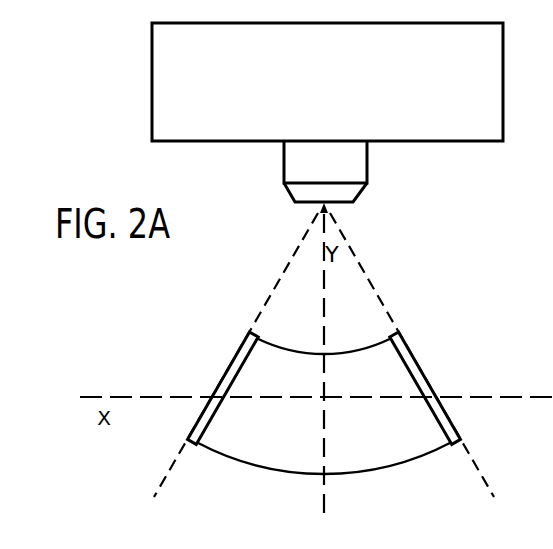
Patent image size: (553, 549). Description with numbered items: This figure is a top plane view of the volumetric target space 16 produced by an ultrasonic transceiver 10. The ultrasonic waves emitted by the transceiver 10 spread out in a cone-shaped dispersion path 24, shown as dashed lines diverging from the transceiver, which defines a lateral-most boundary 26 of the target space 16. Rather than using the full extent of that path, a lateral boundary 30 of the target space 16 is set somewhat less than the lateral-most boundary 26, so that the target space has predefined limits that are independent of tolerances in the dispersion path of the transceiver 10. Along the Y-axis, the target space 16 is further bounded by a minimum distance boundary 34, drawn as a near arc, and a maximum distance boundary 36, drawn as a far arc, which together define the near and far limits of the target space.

The transceiver 10 is at (310, 173).
The volumetric target space 16 is at (275, 442).
The cone-shaped dispersion path 24 is at (355, 255).
The lateral-most boundary 26 is at (412, 364).
The lateral boundary 30 is at (233, 371).
The minimum distance boundary 34 is at (340, 353).
The maximum distance boundary 36 is at (355, 475).